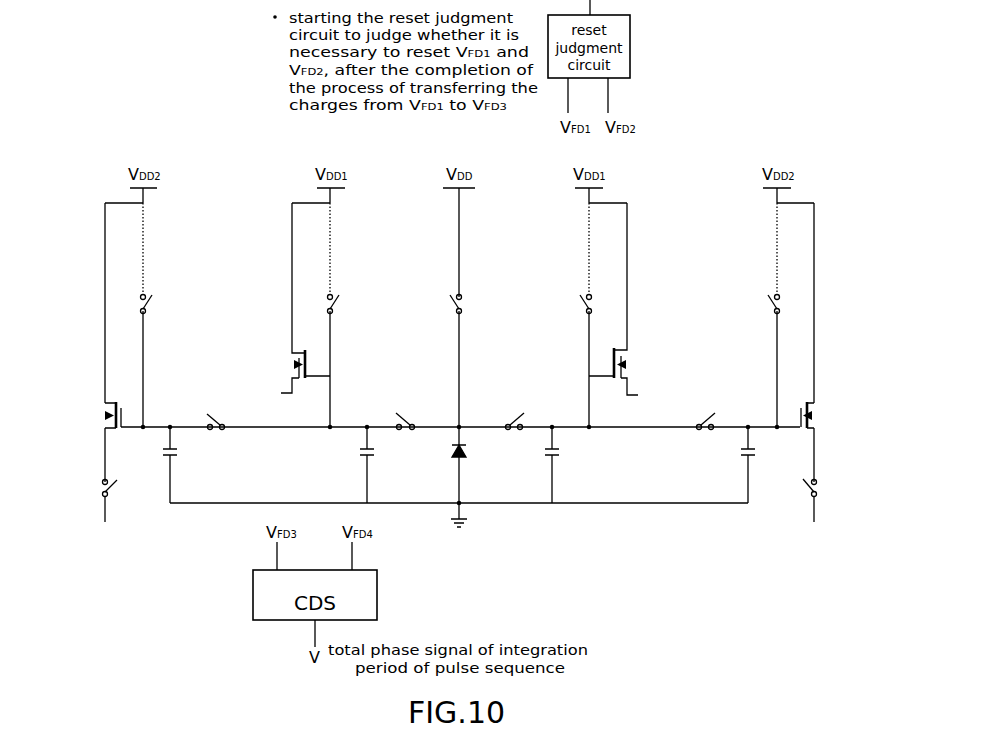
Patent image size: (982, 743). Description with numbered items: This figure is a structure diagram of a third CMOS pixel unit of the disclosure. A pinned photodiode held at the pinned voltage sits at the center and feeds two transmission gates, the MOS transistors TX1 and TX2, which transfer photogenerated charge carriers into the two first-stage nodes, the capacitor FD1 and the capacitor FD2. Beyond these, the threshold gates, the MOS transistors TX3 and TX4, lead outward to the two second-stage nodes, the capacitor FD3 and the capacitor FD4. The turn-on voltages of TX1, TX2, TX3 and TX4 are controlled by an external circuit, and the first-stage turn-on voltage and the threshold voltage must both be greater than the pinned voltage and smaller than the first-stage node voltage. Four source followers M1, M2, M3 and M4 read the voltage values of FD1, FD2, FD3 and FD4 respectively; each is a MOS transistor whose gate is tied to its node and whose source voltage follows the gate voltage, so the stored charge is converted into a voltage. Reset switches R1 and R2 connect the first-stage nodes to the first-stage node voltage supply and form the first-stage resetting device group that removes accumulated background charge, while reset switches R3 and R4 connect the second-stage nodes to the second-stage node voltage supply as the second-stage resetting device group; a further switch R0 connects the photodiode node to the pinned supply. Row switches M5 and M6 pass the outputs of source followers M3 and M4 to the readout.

The source follower M1 is at (290, 375).
The source follower M2 is at (629, 374).
The source follower M3 is at (95, 438).
The source follower M4 is at (824, 438).
The row select switch M5 is at (108, 508).
The row select switch M6 is at (809, 508).
The anti-blooming reset switch R0 is at (455, 302).
The reset switch R1 is at (335, 302).
The reset switch R2 is at (583, 302).
The reset switch R3 is at (151, 302).
The reset switch R4 is at (768, 302).
The transmission gate TX1 is at (398, 418).
The transmission gate TX2 is at (522, 418).
The threshold gate TX3 is at (211, 416).
The threshold gate TX4 is at (713, 416).
The capacitor FD1 is at (348, 465).
The capacitor FD2 is at (574, 465).
The capacitor FD3 is at (190, 465).
The capacitor FD4 is at (729, 465).